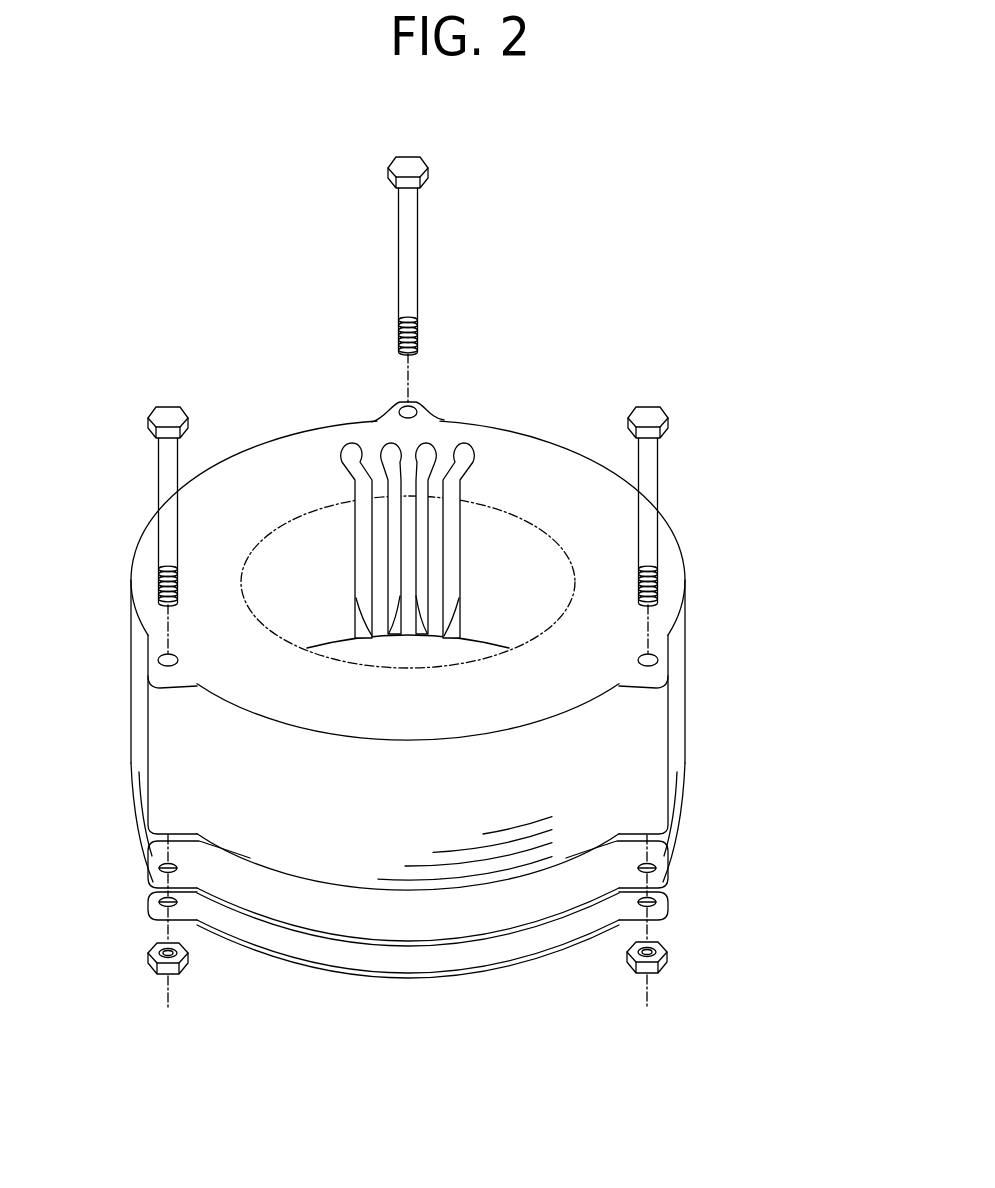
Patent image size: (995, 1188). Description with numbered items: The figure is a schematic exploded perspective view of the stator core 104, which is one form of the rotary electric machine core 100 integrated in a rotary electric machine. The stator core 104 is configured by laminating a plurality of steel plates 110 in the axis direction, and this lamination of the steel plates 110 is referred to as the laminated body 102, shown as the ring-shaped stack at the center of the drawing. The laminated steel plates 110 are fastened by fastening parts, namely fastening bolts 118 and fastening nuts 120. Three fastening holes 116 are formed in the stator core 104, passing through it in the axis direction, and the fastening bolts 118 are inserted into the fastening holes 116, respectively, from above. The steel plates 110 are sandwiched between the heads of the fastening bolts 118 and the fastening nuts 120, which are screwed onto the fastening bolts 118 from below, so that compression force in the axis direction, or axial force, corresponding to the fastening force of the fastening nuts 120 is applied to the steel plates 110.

The rotary electric machine core 100 is at (449, 606).
The stator core 104 is at (603, 287).
The laminated body 102 is at (712, 697).
The steel plate 110 is at (333, 921).
The fastening hole 116 is at (402, 409).
The fastening bolt 118 is at (412, 227).
The fastening nut 120 is at (150, 961).